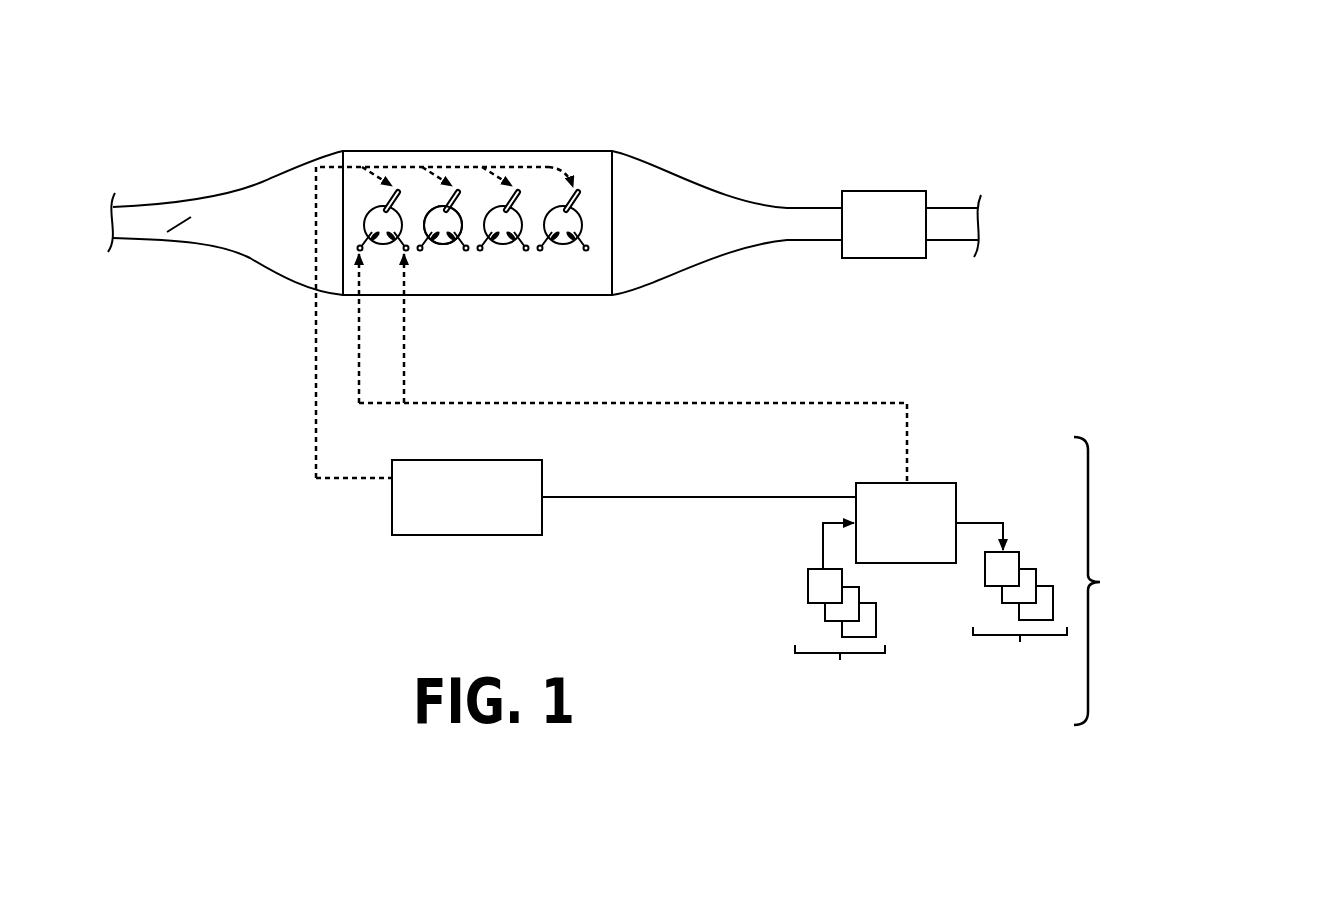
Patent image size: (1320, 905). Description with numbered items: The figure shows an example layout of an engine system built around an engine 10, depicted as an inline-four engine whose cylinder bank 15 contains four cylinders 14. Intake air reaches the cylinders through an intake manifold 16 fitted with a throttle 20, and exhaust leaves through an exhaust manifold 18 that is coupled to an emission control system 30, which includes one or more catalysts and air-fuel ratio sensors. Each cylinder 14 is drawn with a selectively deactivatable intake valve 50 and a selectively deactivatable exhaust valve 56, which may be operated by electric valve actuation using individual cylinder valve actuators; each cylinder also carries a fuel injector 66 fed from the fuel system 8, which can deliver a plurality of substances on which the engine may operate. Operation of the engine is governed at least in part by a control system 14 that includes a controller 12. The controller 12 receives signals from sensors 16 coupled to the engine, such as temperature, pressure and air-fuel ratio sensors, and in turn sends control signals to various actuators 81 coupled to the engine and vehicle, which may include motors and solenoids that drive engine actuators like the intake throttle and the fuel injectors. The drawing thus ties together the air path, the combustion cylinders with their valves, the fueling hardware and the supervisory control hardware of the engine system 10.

The engine 10 is at (616, 104).
The intake manifold 16 is at (217, 197).
The throttle 20 is at (178, 222).
The fuel injectors 66 is at (384, 203).
The cylinders 14 is at (582, 218).
The cylinder bank 15 is at (437, 285).
The intake valves 50 is at (539, 251).
The exhaust valves 56 is at (572, 243).
The exhaust manifold 18 is at (680, 197).
The emission control system 30 is at (885, 191).
The fuel system 8 is at (586, 497).
The controller 12 is at (657, 408).
The actuators 81 is at (1011, 607).